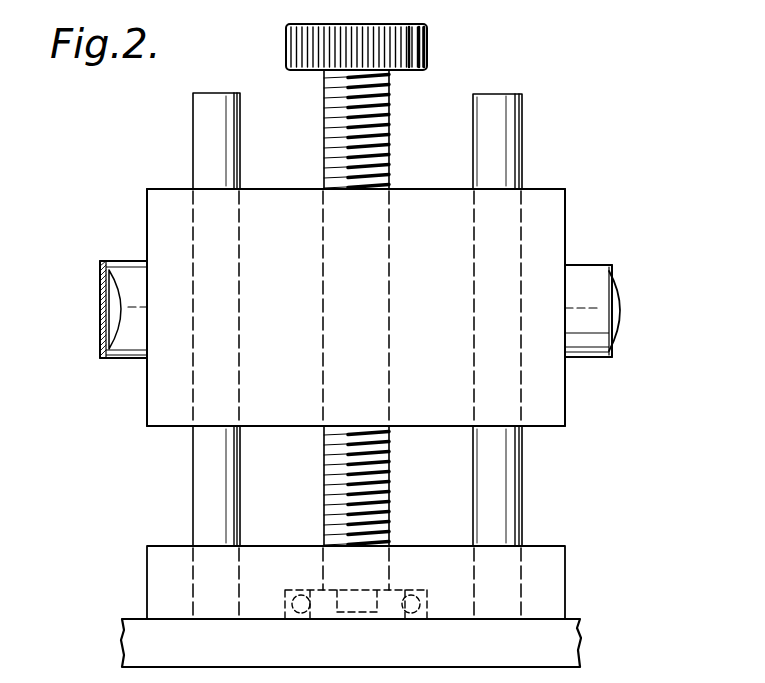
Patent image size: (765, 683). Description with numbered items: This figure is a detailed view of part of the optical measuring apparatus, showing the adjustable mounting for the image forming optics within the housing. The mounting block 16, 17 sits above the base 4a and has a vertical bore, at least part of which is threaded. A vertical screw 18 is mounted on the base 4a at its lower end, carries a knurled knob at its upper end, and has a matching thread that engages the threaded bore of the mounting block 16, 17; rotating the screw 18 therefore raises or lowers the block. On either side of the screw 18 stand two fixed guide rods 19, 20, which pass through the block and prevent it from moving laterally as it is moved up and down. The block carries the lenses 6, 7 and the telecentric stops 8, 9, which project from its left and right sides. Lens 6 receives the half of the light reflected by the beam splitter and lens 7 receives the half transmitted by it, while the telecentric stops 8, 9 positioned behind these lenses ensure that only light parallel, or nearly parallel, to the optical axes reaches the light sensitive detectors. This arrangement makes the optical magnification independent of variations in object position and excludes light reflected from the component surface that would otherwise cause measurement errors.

The vertical screw 18 is at (368, 136).
The fixed guide rod 19 is at (203, 146).
The fixed guide rod 20 is at (498, 138).
The mounting block 16 is at (441, 293).
The mounting block 17 is at (356, 307).
The telecentric stop 8 is at (100, 313).
The telecentric stop 9 is at (123, 309).
The lens 6 is at (614, 270).
The lens 7 is at (588, 311).
The base 4a is at (147, 632).